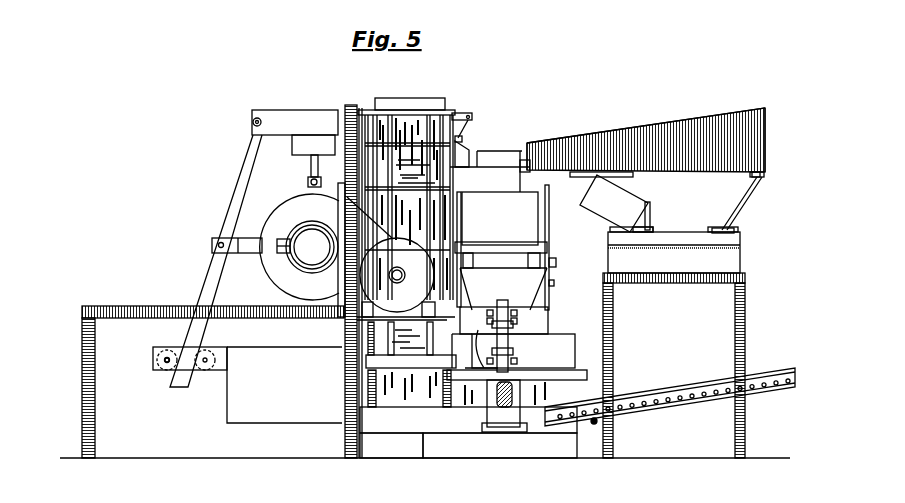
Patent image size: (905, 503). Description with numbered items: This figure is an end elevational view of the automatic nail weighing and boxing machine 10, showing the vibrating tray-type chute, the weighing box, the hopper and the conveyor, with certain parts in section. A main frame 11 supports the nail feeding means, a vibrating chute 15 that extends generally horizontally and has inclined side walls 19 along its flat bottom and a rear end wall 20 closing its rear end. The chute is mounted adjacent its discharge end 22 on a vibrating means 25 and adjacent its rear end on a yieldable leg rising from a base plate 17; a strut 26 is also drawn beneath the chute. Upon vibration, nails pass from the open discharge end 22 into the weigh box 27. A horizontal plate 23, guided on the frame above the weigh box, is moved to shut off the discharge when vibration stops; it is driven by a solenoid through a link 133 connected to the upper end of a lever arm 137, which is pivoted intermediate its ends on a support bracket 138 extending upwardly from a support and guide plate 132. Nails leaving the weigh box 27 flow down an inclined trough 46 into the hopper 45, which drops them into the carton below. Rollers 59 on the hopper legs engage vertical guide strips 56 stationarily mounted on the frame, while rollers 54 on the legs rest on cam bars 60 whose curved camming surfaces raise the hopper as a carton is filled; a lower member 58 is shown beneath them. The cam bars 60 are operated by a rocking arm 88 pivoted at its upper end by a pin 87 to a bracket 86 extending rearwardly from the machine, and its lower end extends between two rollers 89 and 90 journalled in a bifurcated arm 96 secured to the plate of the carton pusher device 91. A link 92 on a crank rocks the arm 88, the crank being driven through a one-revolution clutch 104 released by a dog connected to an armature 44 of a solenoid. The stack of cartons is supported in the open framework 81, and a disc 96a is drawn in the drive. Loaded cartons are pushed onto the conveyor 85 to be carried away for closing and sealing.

The automatic nail weighing and boxing machine 10 is at (552, 256).
The main frame 11 is at (652, 455).
The vibrating chute 15 is at (734, 112).
The base plate 17 is at (740, 241).
The inclined side walls 19 is at (690, 130).
The rear end wall 20 is at (767, 128).
The discharge end 22 is at (529, 148).
The horizontal plate 23 is at (527, 172).
The vibrating means 25 is at (616, 203).
The strut 26 is at (745, 200).
The weigh box 27 is at (500, 218).
The armature 44 is at (310, 160).
The hopper 45 is at (535, 310).
The inclined trough 46 is at (503, 281).
The rollers 54 is at (510, 334).
The vertical guide strips 56 is at (496, 305).
The lower box 58 is at (515, 362).
The rollers 59 is at (491, 321).
The cam bars 60 is at (480, 366).
The open framework 81 is at (398, 120).
The conveyor 85 is at (765, 396).
The bracket 86 is at (318, 108).
The pin 87 is at (252, 122).
The rocking arm 88 is at (210, 268).
The roller 89 is at (205, 370).
The roller 90 is at (165, 370).
The carton pusher device 91 is at (226, 347).
The link 92 is at (250, 253).
The bifurcated arm 96 is at (164, 352).
The disc 96a is at (406, 277).
The one-revolution clutch 104 is at (306, 240).
The support and guide plate 132 is at (466, 160).
The link 133 is at (455, 113).
The lever arm 137 is at (466, 130).
The support bracket 138 is at (462, 140).